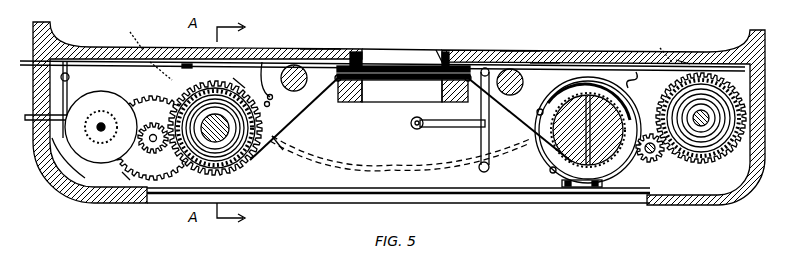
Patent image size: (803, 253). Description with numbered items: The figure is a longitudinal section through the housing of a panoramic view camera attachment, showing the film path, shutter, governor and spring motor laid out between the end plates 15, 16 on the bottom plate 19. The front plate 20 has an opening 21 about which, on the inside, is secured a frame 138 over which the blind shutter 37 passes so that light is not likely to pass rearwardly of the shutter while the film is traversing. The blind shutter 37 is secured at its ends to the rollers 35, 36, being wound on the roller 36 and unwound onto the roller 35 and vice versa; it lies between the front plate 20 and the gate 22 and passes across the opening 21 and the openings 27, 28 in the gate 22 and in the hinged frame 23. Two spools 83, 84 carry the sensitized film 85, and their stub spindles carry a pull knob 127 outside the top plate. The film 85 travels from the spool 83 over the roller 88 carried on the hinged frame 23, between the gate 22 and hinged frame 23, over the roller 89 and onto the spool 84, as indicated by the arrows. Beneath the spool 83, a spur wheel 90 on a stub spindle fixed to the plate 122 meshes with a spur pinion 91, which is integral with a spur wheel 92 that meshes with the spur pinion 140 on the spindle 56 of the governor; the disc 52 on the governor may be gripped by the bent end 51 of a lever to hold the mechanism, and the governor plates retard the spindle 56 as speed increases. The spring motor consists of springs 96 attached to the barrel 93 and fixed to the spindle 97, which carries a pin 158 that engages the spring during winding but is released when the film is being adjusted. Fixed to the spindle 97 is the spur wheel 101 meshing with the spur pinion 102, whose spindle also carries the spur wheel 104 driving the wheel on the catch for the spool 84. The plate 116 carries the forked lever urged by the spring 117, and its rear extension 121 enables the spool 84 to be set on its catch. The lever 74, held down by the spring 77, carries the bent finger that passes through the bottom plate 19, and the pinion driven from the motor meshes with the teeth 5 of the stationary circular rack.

The teeth 5 is at (348, 166).
The end plate 15 is at (728, 204).
The end plate 16 is at (75, 190).
The bottom plate 19 is at (540, 189).
The front plate 20 is at (516, 50).
The opening 21 is at (375, 56).
The gate 22 is at (440, 52).
The hinged frame 23 is at (352, 103).
The opening 27 is at (397, 62).
The opening 28 is at (372, 92).
The roller 35 is at (294, 64).
The roller 36 is at (538, 58).
The blind shutter 37 is at (320, 50).
The bent end 51 is at (63, 150).
The disc 52 is at (114, 103).
The spindle 56 is at (100, 122).
The lever 74 is at (485, 132).
The spring 77 is at (445, 123).
The spool 83 is at (186, 164).
The spool 84 is at (599, 156).
The sensitized film 85 is at (276, 144).
The roller 88 is at (326, 104).
The roller 89 is at (478, 52).
The spur wheel 90 is at (176, 163).
The spur pinion 91 is at (153, 138).
The spur wheel 92 is at (133, 174).
The barrel 93 is at (683, 160).
The springs 96 is at (666, 56).
The spindle 97 is at (703, 110).
The spur wheel 101 is at (733, 163).
The spur pinion 102 is at (646, 80).
The spur wheel 104 is at (651, 156).
The plate 116 is at (620, 92).
The spring 117 is at (563, 188).
The extension 121 is at (589, 80).
The plate 122 is at (234, 78).
The pull knob 127 is at (147, 246).
The frame 138 is at (357, 52).
The spur pinion 140 is at (100, 143).
The pin 158 is at (680, 58).